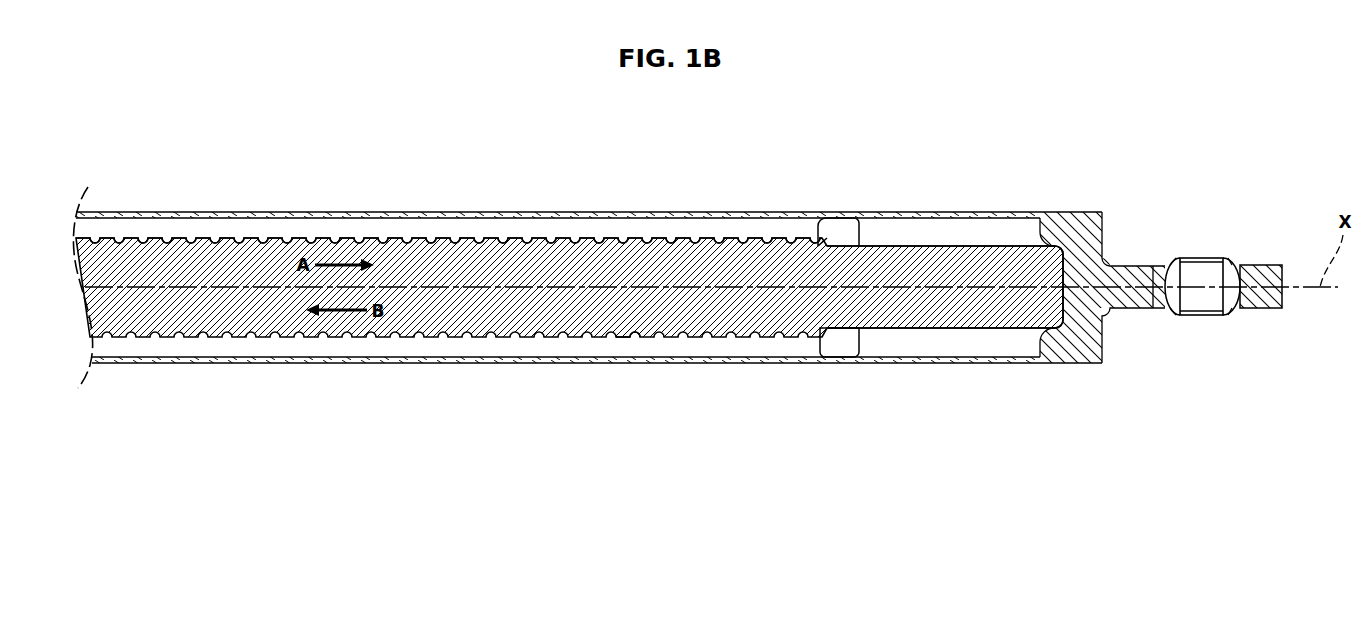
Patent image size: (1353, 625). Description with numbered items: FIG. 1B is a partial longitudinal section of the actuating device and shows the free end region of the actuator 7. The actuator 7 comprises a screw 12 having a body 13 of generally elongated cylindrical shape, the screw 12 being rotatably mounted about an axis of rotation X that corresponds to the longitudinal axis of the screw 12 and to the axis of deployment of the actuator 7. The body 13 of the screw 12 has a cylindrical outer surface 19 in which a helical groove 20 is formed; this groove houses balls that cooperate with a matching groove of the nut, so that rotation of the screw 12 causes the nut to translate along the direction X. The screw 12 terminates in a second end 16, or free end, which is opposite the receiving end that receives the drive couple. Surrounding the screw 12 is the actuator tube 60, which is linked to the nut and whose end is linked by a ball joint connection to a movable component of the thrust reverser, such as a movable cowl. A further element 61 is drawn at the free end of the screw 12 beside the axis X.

The actuator 7 is at (726, 170).
The screw 12 is at (490, 310).
The body 13 is at (530, 263).
The second end 16 is at (963, 273).
The cylindrical outer surface 19 is at (623, 336).
The helical groove 20 is at (635, 337).
The actuator tube 60 is at (640, 213).
The nut 61 is at (1230, 275).